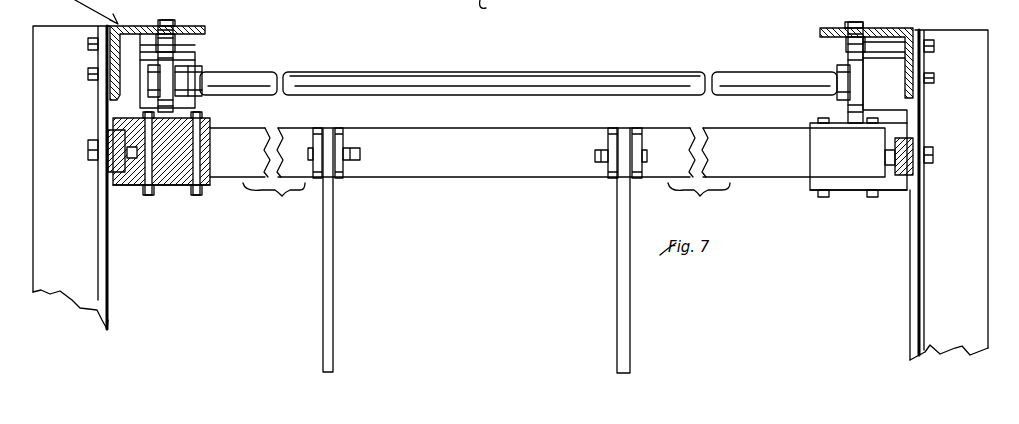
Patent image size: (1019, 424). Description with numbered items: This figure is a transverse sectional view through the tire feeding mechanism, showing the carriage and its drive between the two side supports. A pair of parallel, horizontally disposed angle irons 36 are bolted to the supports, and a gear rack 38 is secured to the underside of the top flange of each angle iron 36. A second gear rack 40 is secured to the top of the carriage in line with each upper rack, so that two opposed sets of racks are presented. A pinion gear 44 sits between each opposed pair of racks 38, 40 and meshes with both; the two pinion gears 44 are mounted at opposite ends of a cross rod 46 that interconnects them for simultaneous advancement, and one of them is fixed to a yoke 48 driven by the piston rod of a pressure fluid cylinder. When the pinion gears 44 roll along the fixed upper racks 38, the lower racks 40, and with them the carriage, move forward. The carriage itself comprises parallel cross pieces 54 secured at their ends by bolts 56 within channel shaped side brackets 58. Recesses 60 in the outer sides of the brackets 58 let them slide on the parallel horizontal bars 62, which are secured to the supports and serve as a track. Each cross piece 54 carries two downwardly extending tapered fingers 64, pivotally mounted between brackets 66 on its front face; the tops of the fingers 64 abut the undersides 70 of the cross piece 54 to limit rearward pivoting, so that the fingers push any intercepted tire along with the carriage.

The angle iron 36 is at (150, 26).
The gear rack 38 is at (178, 44).
The gear rack 40 is at (175, 100).
The pinion gear 44 is at (182, 60).
The cross rod 46 is at (395, 80).
The yoke 48 is at (190, 80).
The cross piece 54 is at (510, 165).
The bolt 56 is at (150, 196).
The side bracket 58 is at (125, 187).
The recess 60 is at (115, 166).
The horizontal bar 62 is at (110, 135).
The tapered finger 64 is at (333, 312).
The bracket 66 is at (318, 128).
The underside 70 is at (470, 180).